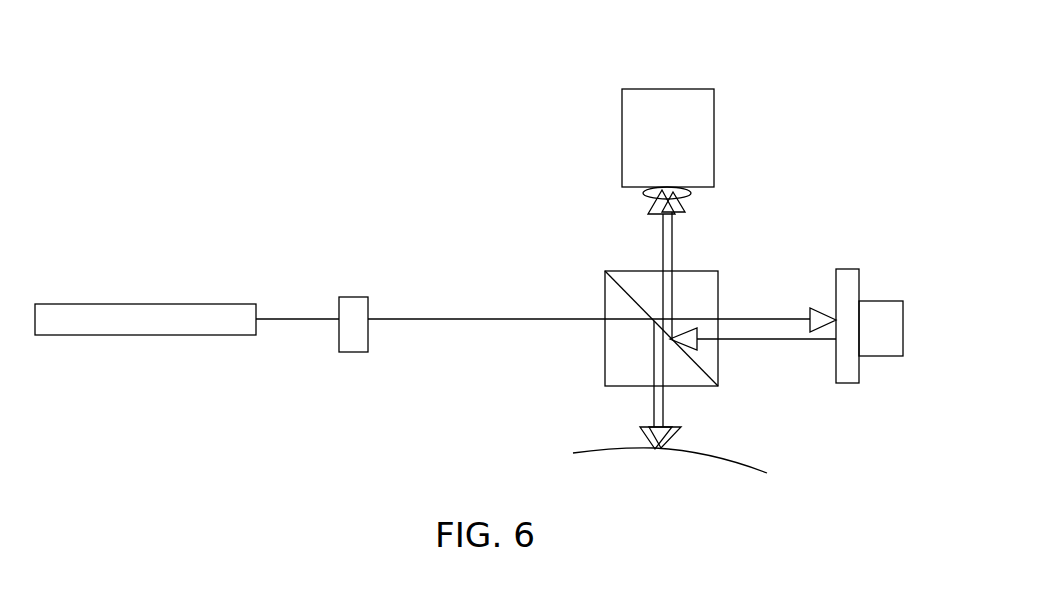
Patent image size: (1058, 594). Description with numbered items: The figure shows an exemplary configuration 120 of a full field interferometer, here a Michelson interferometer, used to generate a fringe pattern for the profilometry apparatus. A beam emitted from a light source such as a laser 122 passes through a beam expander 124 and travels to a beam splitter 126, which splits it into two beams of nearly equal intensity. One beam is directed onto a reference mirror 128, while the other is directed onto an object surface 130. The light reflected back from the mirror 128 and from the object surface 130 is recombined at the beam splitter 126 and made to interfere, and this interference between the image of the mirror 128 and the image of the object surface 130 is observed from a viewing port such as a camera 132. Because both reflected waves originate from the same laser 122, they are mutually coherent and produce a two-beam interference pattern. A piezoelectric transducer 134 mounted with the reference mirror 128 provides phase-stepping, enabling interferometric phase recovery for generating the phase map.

The exemplary configuration of a full field interferometer 120 is at (268, 45).
The laser 122 is at (145, 304).
The beam expander 124 is at (353, 297).
The beam splitter 126 is at (605, 356).
The reference mirror 128 is at (846, 269).
The object surface 130 is at (742, 468).
The camera 132 is at (714, 137).
The piezoelectric transducer (PZT) 134 is at (897, 356).